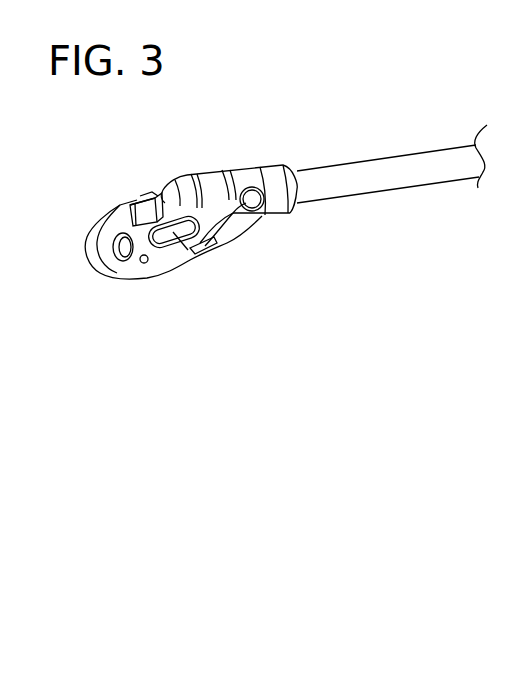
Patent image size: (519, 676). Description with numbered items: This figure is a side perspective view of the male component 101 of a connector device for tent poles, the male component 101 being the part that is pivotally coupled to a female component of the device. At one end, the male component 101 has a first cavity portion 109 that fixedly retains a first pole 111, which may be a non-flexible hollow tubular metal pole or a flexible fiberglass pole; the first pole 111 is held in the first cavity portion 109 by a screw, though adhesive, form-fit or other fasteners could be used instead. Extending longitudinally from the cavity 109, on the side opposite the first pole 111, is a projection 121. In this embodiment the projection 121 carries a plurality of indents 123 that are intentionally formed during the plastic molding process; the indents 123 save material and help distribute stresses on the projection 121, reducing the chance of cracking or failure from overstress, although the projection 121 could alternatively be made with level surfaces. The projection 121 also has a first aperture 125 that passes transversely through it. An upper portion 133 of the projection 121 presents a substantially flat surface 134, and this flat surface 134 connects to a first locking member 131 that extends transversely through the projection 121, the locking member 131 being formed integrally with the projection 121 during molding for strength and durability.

The male component 101 is at (183, 280).
The first cavity portion 109 is at (267, 217).
The first pole 111 is at (359, 189).
The projection 121 is at (196, 193).
The indents 123 is at (188, 250).
The first aperture 125 is at (143, 263).
The first locking member 131 is at (137, 199).
The upper portion 133 is at (145, 197).
The flat surface 134 is at (147, 197).